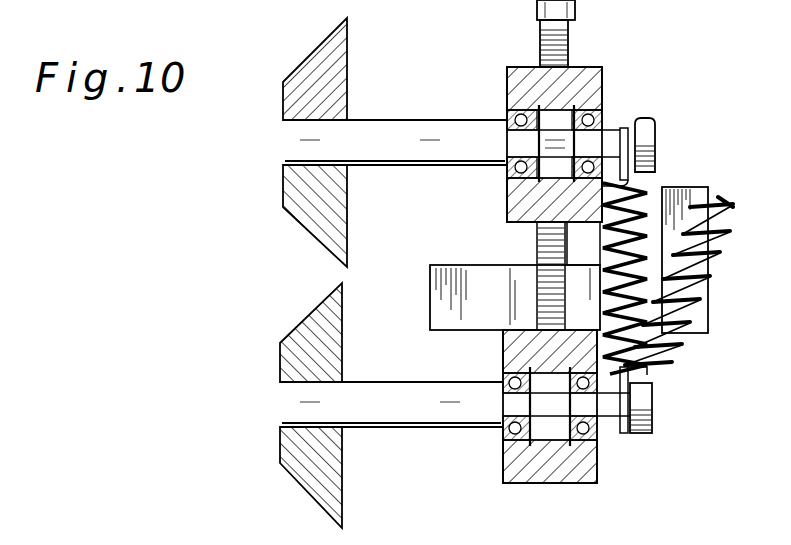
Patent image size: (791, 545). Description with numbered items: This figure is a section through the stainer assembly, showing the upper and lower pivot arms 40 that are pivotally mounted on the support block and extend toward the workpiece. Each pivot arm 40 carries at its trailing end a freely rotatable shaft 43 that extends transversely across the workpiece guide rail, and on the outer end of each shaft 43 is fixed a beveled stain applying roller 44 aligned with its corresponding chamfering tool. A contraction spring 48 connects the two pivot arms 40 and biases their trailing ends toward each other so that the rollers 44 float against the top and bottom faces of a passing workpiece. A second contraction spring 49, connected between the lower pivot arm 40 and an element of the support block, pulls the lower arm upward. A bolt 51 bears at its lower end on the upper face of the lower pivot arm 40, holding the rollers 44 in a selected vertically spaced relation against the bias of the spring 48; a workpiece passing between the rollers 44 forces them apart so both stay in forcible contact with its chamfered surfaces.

The pivot arm 40 is at (518, 88).
The shaft 43 is at (404, 157).
The stain applying roller 44 is at (349, 62).
The contraction spring 48 is at (652, 200).
The second contraction spring 49 is at (708, 272).
The bolt 51 is at (570, 31).